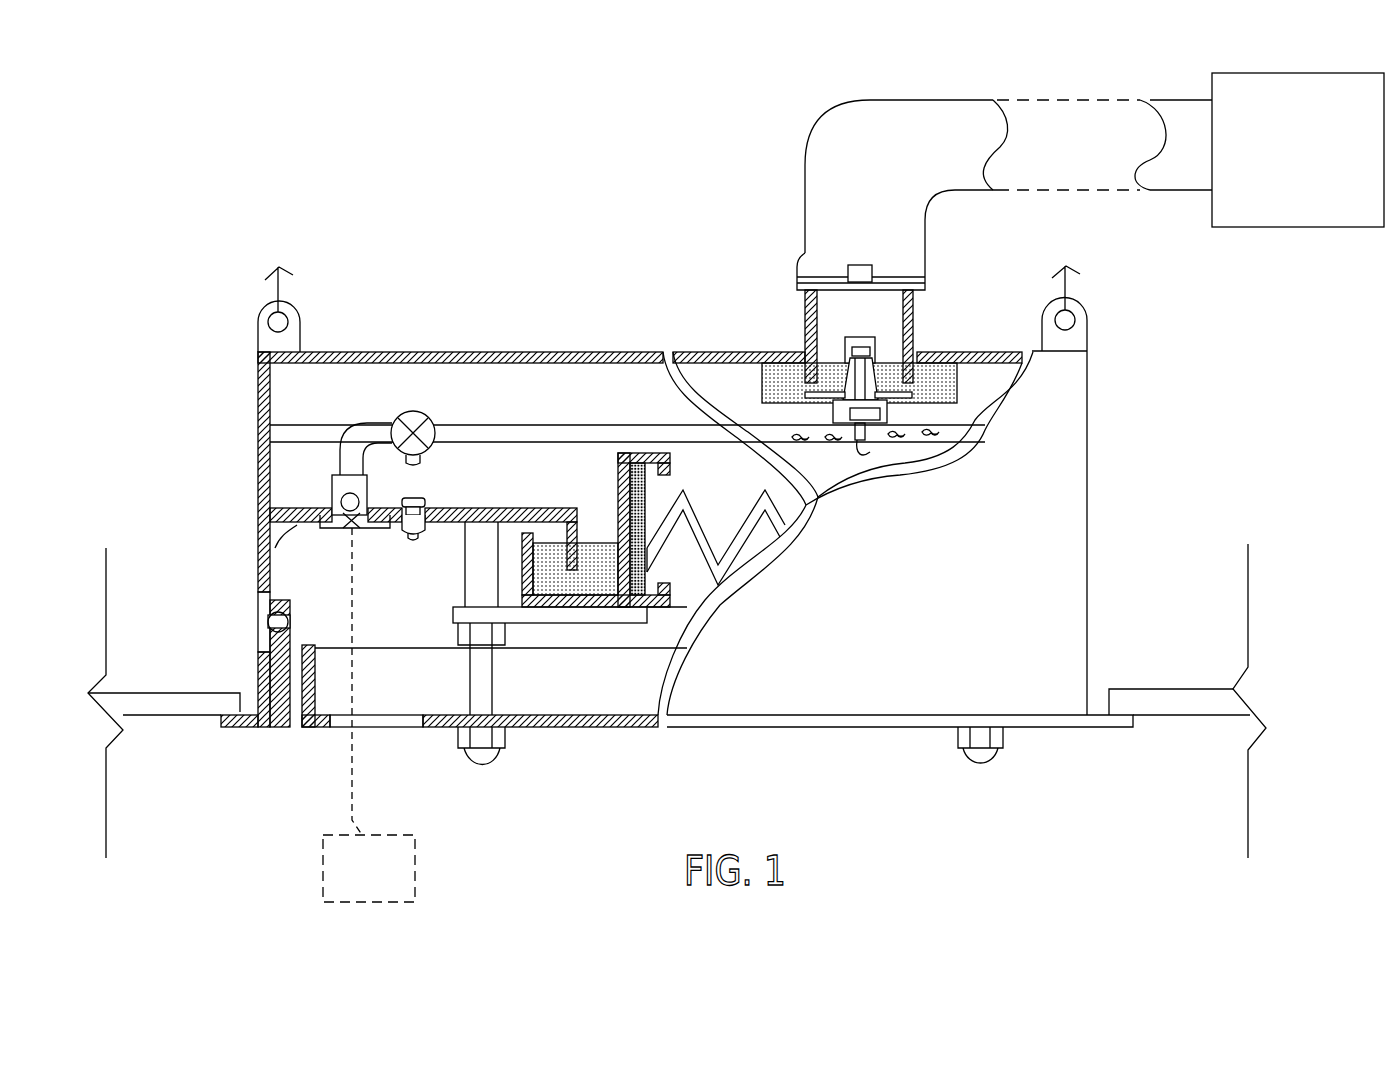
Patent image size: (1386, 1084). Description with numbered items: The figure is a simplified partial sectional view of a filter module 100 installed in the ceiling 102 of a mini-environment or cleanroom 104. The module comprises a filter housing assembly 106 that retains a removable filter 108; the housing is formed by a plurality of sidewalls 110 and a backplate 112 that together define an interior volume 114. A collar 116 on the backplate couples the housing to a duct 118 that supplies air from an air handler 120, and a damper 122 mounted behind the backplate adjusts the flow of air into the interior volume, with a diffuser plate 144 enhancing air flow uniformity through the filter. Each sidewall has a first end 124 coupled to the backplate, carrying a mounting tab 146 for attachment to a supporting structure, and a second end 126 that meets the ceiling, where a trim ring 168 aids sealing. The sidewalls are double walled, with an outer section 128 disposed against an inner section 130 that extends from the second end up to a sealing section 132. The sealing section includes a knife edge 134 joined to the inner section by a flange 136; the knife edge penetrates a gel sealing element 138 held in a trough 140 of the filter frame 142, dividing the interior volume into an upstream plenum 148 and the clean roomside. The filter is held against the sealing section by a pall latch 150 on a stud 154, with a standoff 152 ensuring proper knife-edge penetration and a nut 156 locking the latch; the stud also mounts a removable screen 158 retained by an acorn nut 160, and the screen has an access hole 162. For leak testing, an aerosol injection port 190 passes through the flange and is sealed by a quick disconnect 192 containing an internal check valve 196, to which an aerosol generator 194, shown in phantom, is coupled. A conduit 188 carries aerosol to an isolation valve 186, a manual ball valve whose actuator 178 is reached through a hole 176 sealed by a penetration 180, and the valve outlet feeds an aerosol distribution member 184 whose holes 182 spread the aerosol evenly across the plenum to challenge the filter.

The filter module 100 is at (376, 230).
The ceiling 102 is at (148, 705).
The cleanroom 104 is at (745, 805).
The filter housing assembly 106 is at (1095, 425).
The filter 108 is at (643, 446).
The sidewalls 110 is at (258, 375).
The backplate 112 is at (495, 352).
The interior volume 114 is at (563, 410).
The collar 116 is at (905, 333).
The duct 118 is at (825, 170).
The air handler 120 is at (1280, 165).
The damper 122 is at (825, 366).
The first end 124 is at (258, 352).
The second end 126 is at (278, 730).
The outer section 128 is at (258, 690).
The inner section 130 is at (297, 525).
The sealing section 132 is at (449, 468).
The knife edge 134 is at (580, 527).
The flange 136 is at (498, 510).
The sealing element 138 is at (540, 607).
The trough 140 is at (592, 607).
The frame 142 is at (637, 622).
The diffuser plate 144 is at (757, 383).
The mounting tab 146 is at (298, 312).
The plenum 148 is at (490, 394).
The pall latch 150 is at (458, 640).
The standoff 152 is at (478, 528).
The stud 154 is at (530, 722).
The nut 156 is at (545, 722).
The screen 158 is at (652, 730).
The acorn nut 160 is at (473, 763).
The access hole 162 is at (380, 735).
The trim ring 168 is at (262, 728).
The hole 176 is at (425, 535).
The actuator 178 is at (408, 462).
The penetration 180 is at (415, 540).
The holes 182 is at (890, 328).
The aerosol distribution member 184 is at (625, 425).
The isolation valve 186 is at (405, 415).
The conduit 188 is at (345, 475).
The aerosol injection port 190 is at (357, 538).
The quick disconnect 192 is at (338, 478).
The aerosol generator 194 is at (348, 875).
The internal check valve 196 is at (332, 496).